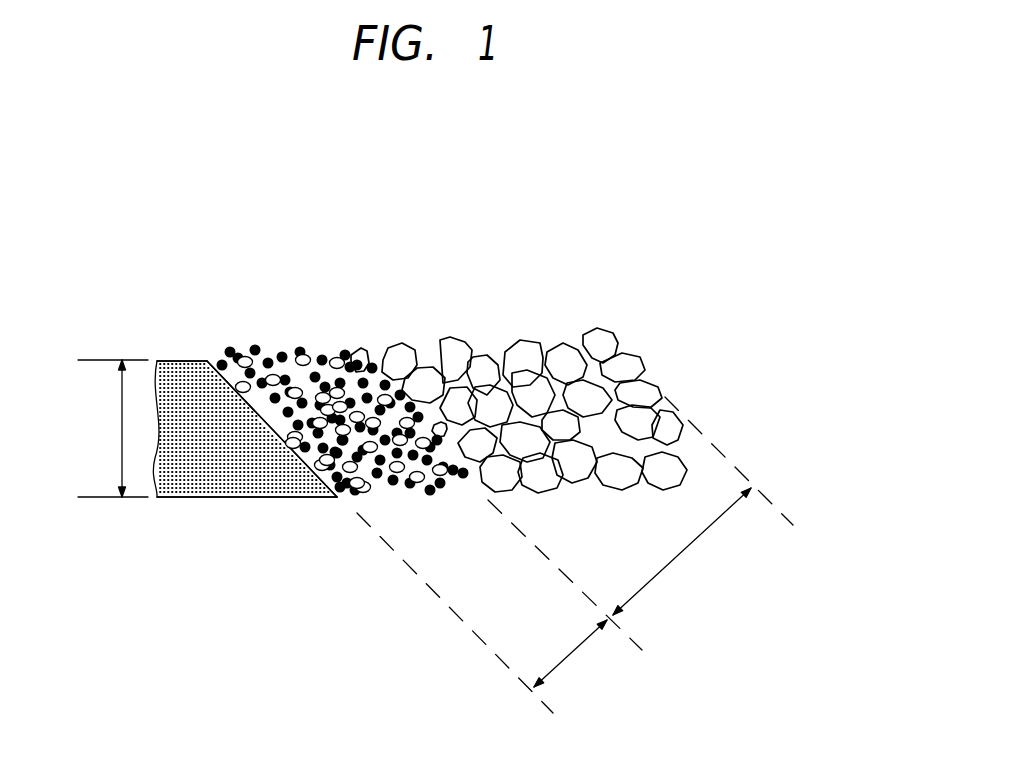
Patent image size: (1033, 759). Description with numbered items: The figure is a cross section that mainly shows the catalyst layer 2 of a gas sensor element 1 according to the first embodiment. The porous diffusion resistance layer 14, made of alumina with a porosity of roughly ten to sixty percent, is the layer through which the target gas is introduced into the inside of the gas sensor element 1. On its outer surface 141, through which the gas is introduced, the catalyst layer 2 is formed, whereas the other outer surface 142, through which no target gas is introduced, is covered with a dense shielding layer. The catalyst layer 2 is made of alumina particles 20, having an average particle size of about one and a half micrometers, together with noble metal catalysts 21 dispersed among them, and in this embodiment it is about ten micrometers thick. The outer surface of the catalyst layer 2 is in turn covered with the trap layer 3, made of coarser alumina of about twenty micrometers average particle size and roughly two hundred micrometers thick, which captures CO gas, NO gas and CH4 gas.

The gas sensor element 1 is at (537, 280).
The catalyst layer 2 is at (298, 323).
The trap layer 3 is at (628, 333).
The porous diffusion resistance layer 14 is at (222, 462).
The alumina particles 20 is at (343, 360).
The noble metal catalysts 21 is at (450, 560).
The outer surface 141 is at (256, 358).
The outer surface 142 is at (172, 360).